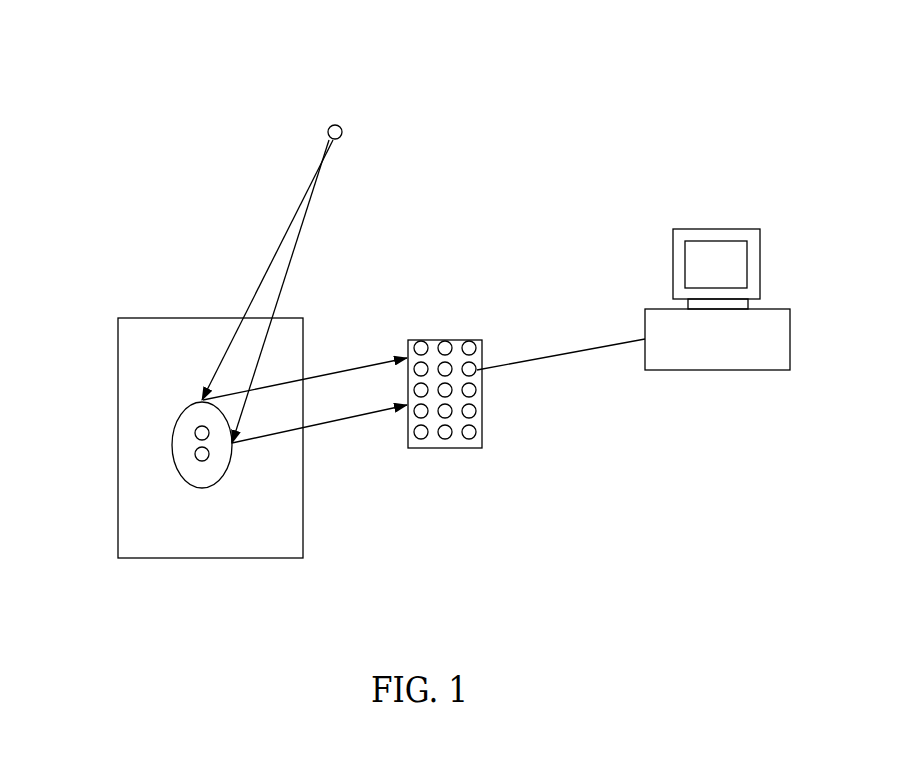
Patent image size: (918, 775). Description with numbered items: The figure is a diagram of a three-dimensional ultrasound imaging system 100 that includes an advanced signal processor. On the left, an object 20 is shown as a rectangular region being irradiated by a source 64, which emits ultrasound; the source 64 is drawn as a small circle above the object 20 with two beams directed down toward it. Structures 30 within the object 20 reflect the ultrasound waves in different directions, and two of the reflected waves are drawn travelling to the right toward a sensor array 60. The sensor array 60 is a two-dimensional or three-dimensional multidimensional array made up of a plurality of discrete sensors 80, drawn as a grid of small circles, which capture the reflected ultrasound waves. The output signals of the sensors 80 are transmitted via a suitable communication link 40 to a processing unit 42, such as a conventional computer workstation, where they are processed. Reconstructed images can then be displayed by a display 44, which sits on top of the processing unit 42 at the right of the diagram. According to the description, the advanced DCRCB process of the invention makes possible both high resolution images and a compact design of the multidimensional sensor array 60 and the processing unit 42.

The 3D ultrasound imaging system 100 is at (62, 39).
The object 20 is at (190, 532).
The structures 30 is at (195, 438).
The communication link 40 is at (535, 361).
The processing unit 42 is at (683, 345).
The display 44 is at (697, 227).
The sensor array 60 is at (480, 418).
The source 64 is at (343, 125).
The sensors 80 is at (471, 346).